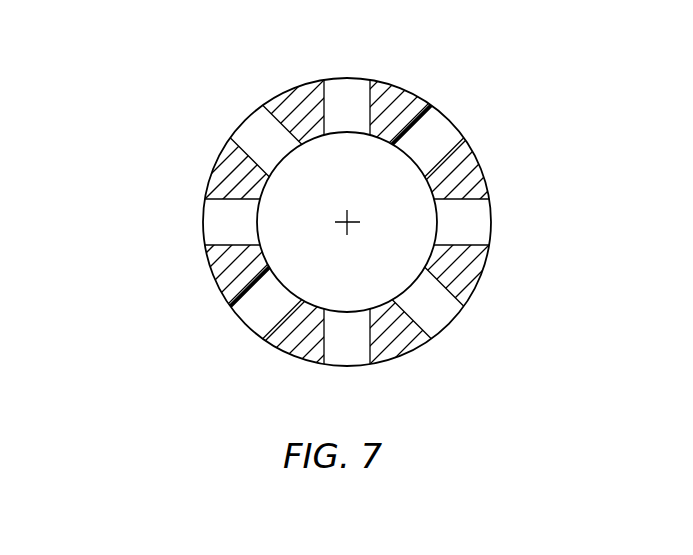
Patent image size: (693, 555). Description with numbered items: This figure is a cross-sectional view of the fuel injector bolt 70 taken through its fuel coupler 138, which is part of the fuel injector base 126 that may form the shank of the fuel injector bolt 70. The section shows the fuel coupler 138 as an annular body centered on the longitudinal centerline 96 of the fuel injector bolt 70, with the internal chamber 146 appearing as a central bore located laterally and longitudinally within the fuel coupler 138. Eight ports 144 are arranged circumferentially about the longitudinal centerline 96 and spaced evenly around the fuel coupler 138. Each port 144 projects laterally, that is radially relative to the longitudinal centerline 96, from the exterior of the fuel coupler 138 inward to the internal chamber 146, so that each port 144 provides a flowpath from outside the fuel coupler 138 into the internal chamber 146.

The fuel injector bolt 70 is at (346, 214).
The fuel injector base 126 is at (346, 214).
The fuel coupler 138 is at (405, 78).
The ports 144 is at (350, 92).
The internal chamber 146 is at (368, 182).
The longitudinal centerline 96 is at (342, 226).